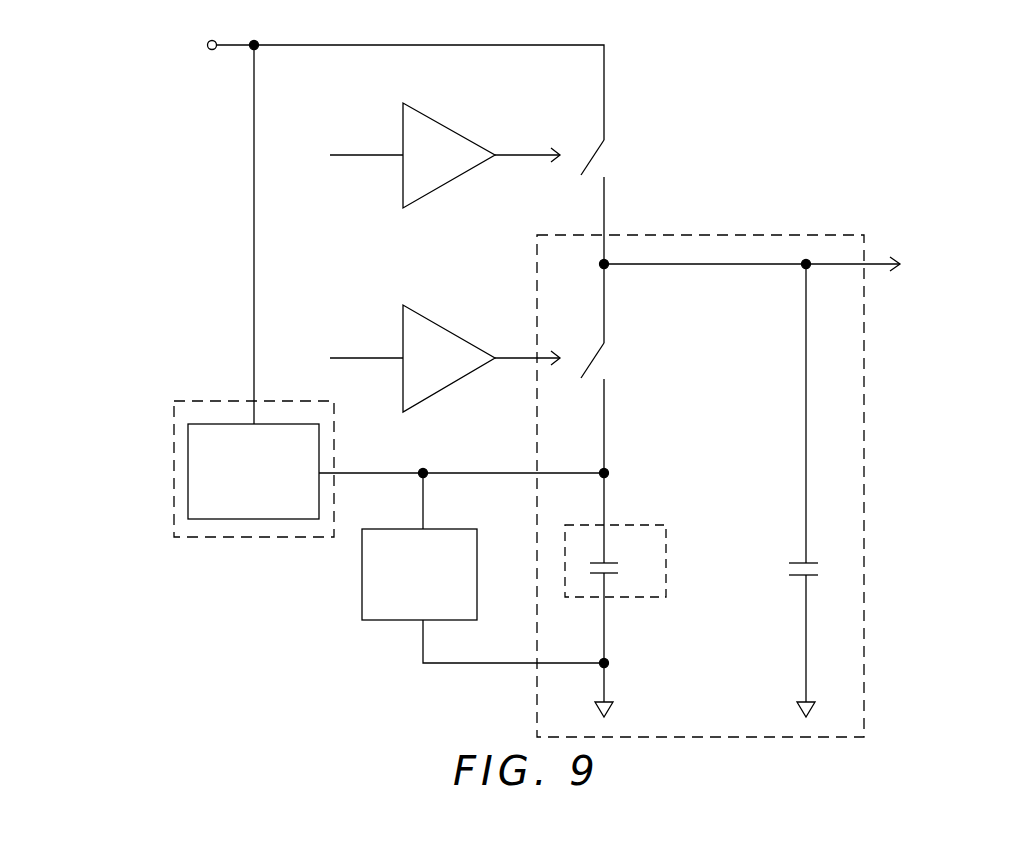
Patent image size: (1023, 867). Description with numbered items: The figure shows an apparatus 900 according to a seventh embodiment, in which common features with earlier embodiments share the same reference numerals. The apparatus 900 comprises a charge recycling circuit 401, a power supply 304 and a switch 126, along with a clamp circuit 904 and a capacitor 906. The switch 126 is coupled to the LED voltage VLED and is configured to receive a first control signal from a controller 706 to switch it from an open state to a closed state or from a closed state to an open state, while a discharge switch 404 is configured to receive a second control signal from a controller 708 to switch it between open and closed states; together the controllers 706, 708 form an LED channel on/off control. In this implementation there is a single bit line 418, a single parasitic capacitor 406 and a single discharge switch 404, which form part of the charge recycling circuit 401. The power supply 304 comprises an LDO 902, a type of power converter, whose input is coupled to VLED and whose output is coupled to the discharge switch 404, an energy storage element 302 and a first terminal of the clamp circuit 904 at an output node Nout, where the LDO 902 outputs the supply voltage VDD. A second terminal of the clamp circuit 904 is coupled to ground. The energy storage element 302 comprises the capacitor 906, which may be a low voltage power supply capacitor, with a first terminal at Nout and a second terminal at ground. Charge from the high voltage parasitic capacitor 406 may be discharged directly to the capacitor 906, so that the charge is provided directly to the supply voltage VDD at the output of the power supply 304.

The apparatus 900 is at (863, 70).
The controller 706 is at (440, 121).
The switch 126 is at (606, 160).
The controller 708 is at (440, 326).
The discharge switch 404 is at (606, 363).
The charge recycling circuit 401 is at (865, 670).
The bit line 418 is at (822, 264).
The parasitic capacitor 406 is at (808, 562).
The capacitor 906 is at (608, 561).
The energy storage element 302 is at (625, 598).
The power supply 304 is at (226, 400).
The LDO 902 is at (268, 424).
The clamp circuit 904 is at (435, 529).